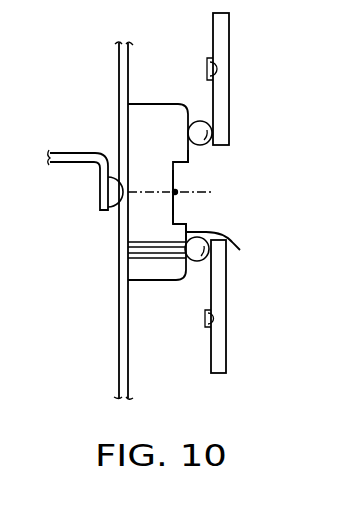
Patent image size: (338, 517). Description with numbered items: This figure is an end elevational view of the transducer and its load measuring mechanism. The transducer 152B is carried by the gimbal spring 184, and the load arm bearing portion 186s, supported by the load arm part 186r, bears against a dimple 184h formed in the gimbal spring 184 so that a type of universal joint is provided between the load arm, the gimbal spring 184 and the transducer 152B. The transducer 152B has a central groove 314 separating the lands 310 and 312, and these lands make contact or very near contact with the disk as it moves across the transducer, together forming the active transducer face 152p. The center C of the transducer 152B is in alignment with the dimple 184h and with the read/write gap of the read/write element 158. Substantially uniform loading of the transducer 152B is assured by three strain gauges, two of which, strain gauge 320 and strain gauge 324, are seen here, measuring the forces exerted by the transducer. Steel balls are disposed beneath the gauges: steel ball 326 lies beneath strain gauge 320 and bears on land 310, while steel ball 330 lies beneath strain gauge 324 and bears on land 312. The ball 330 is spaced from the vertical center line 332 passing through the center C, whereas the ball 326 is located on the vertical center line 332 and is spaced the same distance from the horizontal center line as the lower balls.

The gimbal spring 184 is at (119, 64).
The transducer 152B is at (155, 104).
The read/write element 158 is at (130, 251).
The load arm part 186r is at (72, 152).
The load arm bearing portion 186s is at (128, 192).
The dimple 184h is at (108, 207).
The center of the transducer C is at (175, 192).
The strain gauge 320 is at (229, 91).
The steel ball 326 is at (197, 121).
The land 310 is at (213, 162).
The vertical center line 332 is at (228, 190).
The central groove 314 is at (173, 207).
The active transducer face 152p is at (187, 220).
The land 312 is at (240, 250).
The steel ball 330 is at (197, 262).
The strain gauge 324 is at (226, 337).